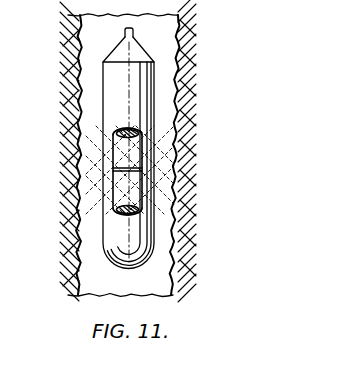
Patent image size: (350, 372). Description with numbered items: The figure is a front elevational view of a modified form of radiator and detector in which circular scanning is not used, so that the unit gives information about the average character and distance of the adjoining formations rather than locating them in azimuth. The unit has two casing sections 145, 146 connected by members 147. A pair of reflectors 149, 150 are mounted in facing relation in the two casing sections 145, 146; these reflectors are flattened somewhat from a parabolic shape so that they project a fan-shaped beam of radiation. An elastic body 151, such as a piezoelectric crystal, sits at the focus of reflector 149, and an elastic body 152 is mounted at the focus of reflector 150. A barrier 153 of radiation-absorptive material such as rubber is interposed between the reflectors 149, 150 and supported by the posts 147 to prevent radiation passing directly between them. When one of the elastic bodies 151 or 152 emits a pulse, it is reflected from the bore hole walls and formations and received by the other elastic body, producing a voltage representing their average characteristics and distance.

The casing section 145 is at (137, 64).
The casing section 146 is at (110, 256).
The members 147 is at (113, 157).
The reflector 149 is at (131, 128).
The reflector 150 is at (126, 214).
The elastic body 151 is at (115, 129).
The elastic body 152 is at (118, 213).
The barrier 153 is at (113, 170).